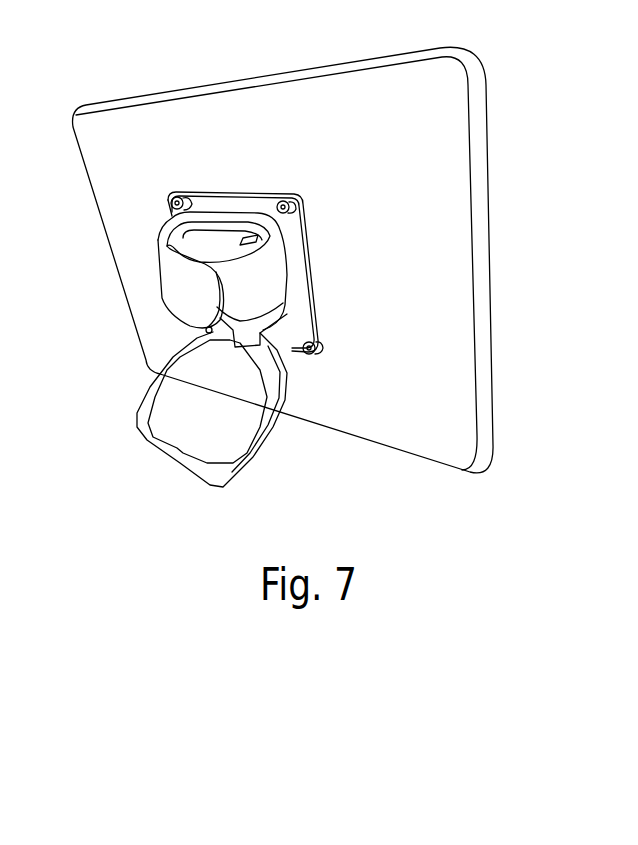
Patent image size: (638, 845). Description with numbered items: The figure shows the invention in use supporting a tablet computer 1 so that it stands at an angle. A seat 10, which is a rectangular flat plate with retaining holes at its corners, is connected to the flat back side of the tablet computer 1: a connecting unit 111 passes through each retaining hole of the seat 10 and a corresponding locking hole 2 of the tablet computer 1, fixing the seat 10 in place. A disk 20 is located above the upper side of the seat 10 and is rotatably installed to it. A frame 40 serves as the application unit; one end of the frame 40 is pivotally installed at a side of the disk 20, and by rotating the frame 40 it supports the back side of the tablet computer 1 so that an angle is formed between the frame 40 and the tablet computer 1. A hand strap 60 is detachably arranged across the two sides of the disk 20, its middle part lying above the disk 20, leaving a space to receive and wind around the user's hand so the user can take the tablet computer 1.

The tablet computer 1 is at (481, 170).
The seat 10 is at (300, 282).
The connecting unit 111 is at (175, 202).
The locking hole 2 is at (195, 193).
The disk 20 is at (203, 245).
The hand strap 60 is at (175, 293).
The frame 40 is at (140, 407).